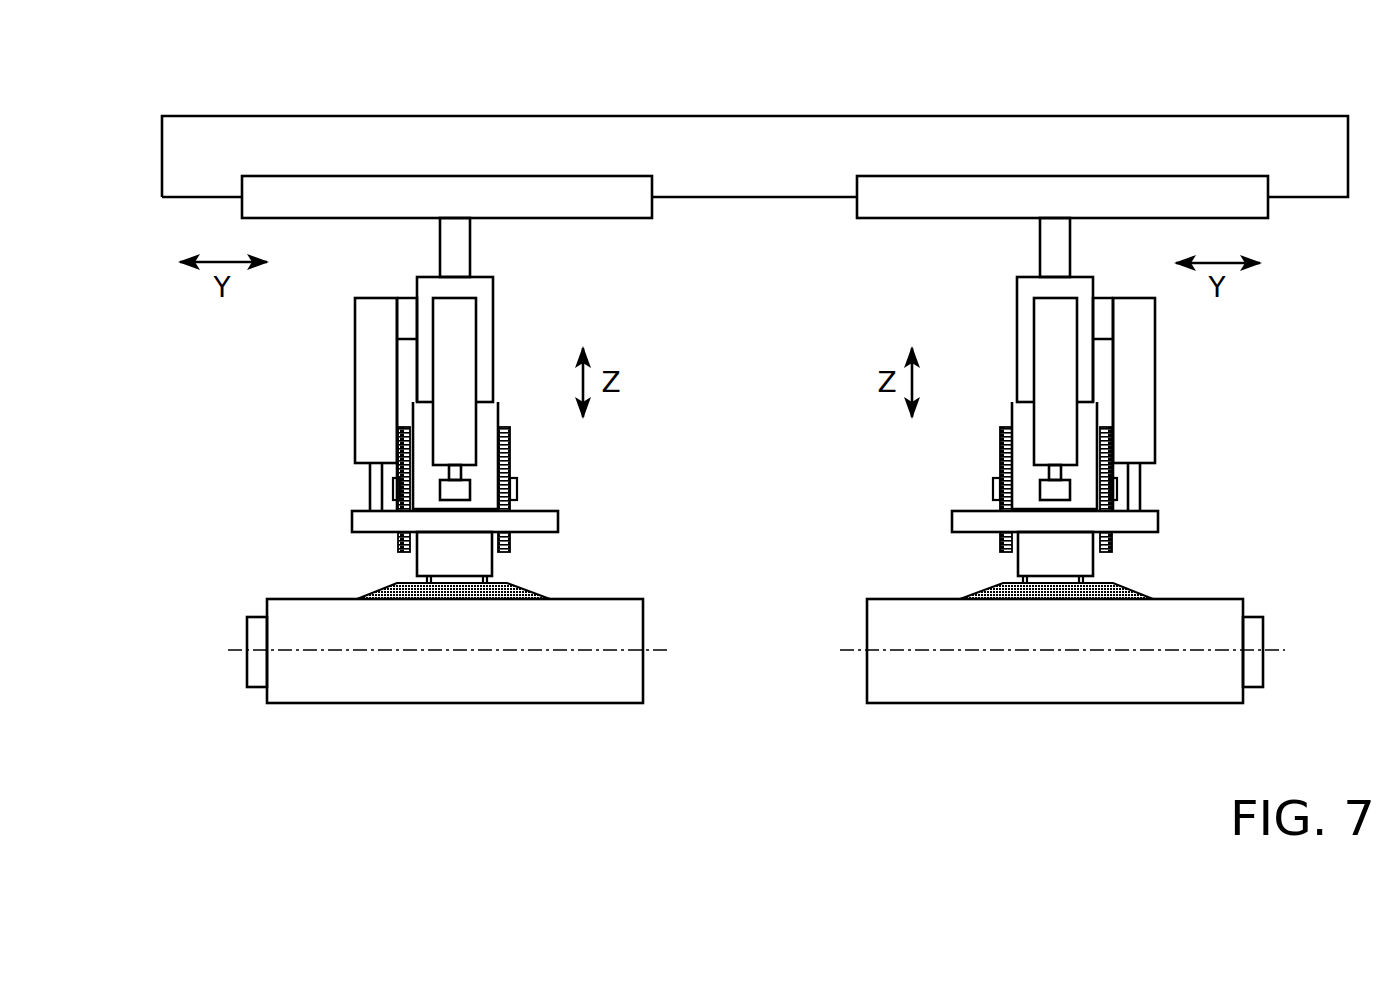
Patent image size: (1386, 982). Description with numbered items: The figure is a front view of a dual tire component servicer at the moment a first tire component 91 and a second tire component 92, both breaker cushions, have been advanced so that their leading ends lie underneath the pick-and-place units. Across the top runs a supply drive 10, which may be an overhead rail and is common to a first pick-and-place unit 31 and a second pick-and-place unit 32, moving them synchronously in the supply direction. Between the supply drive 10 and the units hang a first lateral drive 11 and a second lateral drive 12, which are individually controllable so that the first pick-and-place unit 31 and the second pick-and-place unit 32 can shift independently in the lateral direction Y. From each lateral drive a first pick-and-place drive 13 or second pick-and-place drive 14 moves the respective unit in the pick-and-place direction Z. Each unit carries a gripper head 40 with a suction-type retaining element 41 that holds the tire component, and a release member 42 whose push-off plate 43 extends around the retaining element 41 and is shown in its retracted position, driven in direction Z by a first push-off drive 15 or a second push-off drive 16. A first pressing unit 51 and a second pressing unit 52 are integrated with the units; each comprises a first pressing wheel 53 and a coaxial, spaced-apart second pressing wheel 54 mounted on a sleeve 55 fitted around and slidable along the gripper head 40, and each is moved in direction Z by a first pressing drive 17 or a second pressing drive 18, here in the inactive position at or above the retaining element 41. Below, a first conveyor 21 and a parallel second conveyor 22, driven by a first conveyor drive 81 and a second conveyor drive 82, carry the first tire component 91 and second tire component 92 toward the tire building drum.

The supply drive 10 is at (755, 135).
The first lateral drive 11 is at (1158, 192).
The second lateral drive 12 is at (368, 196).
The first pick-and-place drive 13 is at (1057, 246).
The second pick-and-place drive 14 is at (460, 256).
The first push-off drive 15 is at (1143, 334).
The second push-off drive 16 is at (365, 388).
The first pressing drive 17 is at (1047, 340).
The second pressing drive 18 is at (468, 340).
The first conveyor 21 is at (1052, 680).
The second conveyor 22 is at (453, 678).
The first pick-and-place unit 31 is at (965, 289).
The second pick-and-place unit 32 is at (548, 284).
The gripper head 40 is at (475, 553).
The retaining element 41 is at (447, 579).
The release member 42 is at (835, 509).
The push-off plate 43 is at (555, 522).
The first pressing unit 51 is at (1223, 480).
The second pressing unit 52 is at (272, 452).
The first pressing wheel 53 is at (393, 490).
The second pressing wheel 54 is at (508, 460).
The sleeve 55 is at (484, 411).
The first conveyor drive 81 is at (1255, 630).
The second conveyor drive 82 is at (256, 630).
The first tire component 91 is at (1140, 592).
The second tire component 92 is at (528, 585).